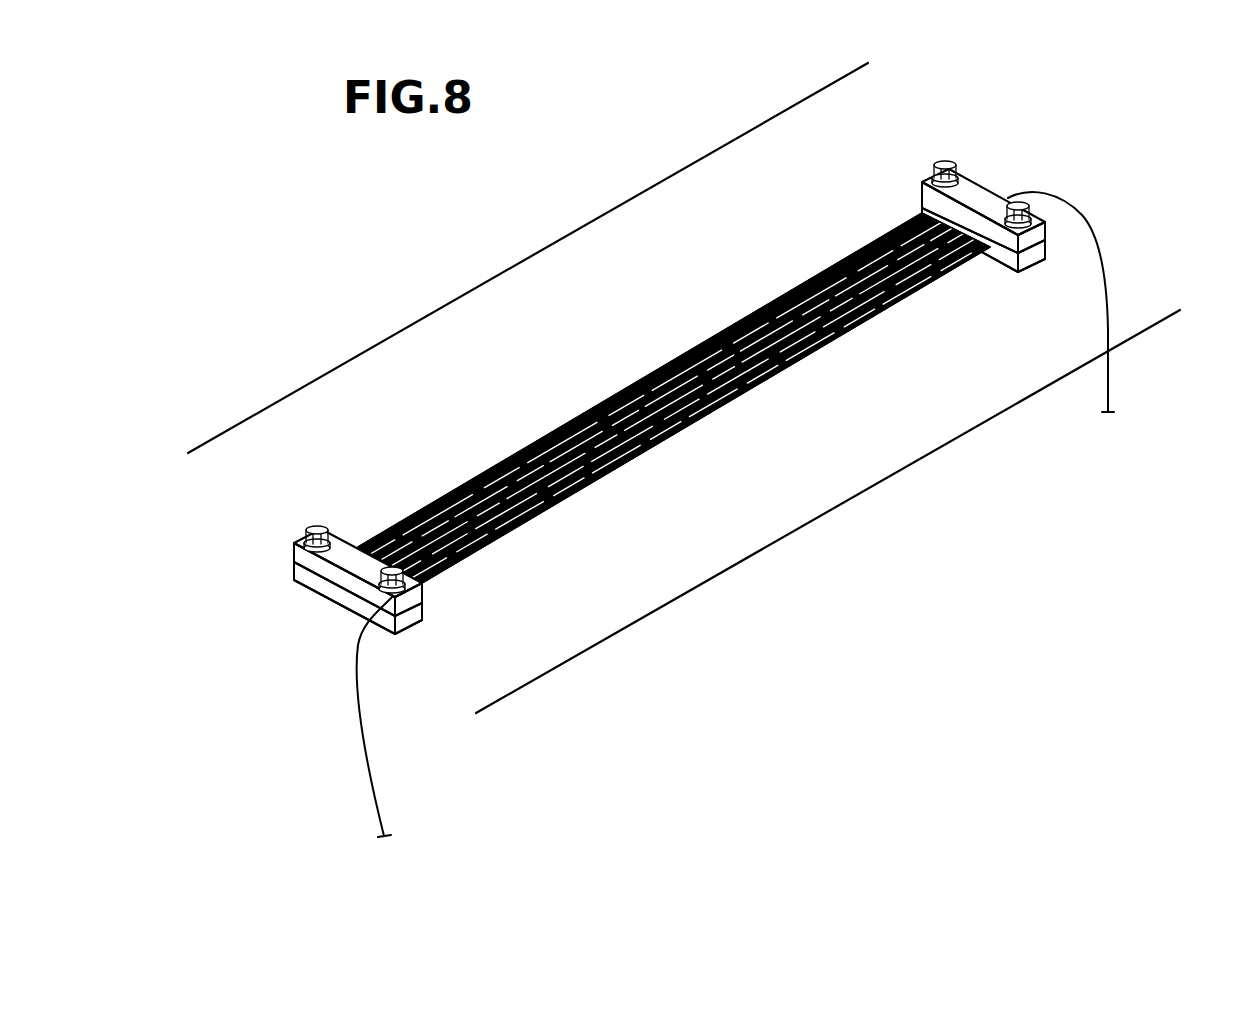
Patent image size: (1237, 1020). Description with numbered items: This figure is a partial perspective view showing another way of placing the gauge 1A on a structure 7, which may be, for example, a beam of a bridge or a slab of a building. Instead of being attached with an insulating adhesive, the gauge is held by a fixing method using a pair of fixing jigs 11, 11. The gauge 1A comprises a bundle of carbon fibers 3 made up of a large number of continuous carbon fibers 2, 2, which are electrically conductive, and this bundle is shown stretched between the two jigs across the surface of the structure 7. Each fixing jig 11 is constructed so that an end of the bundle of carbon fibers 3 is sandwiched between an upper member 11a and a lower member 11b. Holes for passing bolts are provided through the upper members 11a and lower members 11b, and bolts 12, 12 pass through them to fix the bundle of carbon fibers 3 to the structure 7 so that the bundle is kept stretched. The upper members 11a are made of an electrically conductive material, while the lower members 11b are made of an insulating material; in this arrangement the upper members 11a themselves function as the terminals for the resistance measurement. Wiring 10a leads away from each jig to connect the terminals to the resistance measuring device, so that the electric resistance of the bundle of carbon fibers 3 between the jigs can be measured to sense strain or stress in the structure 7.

The gauge 1A is at (783, 268).
The continuous carbon fibers 2 is at (495, 463).
The bundle of carbon fibers 3 is at (642, 383).
The structure 7 is at (655, 213).
The wiring 10a is at (1108, 370).
The fixing jigs 11 is at (1024, 182).
The upper members 11a is at (980, 193).
The lower members 11b is at (1007, 256).
The bolts 12 is at (945, 158).